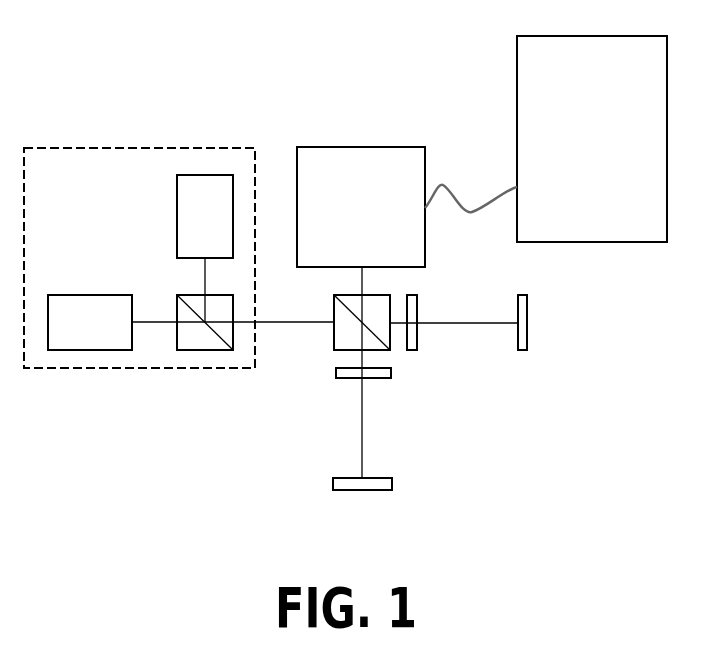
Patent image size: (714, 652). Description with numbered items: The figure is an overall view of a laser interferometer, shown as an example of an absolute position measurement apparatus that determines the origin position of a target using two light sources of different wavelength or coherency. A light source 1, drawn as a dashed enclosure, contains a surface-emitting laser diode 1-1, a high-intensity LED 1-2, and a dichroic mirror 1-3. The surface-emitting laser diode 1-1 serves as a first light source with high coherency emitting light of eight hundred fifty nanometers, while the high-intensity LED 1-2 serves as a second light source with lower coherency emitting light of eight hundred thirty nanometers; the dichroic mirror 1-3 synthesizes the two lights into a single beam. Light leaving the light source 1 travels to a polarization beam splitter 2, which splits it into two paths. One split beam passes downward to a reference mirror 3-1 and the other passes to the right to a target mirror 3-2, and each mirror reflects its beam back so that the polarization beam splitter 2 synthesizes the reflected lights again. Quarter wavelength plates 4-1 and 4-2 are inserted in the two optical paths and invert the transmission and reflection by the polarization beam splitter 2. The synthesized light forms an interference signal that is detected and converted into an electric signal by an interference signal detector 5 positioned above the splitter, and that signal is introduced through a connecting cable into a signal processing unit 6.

The light source 1 is at (139, 258).
The surface-emitting laser diode 1-1 is at (64, 355).
The high-intensity LED 1-2 is at (170, 231).
The dichroic mirror 1-3 is at (201, 356).
The polarization beam splitter 2 is at (326, 359).
The reference mirror 3-1 is at (402, 487).
The target mirror 3-2 is at (540, 329).
The quarter wavelength plate 4-1 is at (399, 389).
The quarter wavelength plate 4-2 is at (425, 361).
The interference signal detector 5 is at (361, 207).
The signal processing unit 6 is at (592, 139).